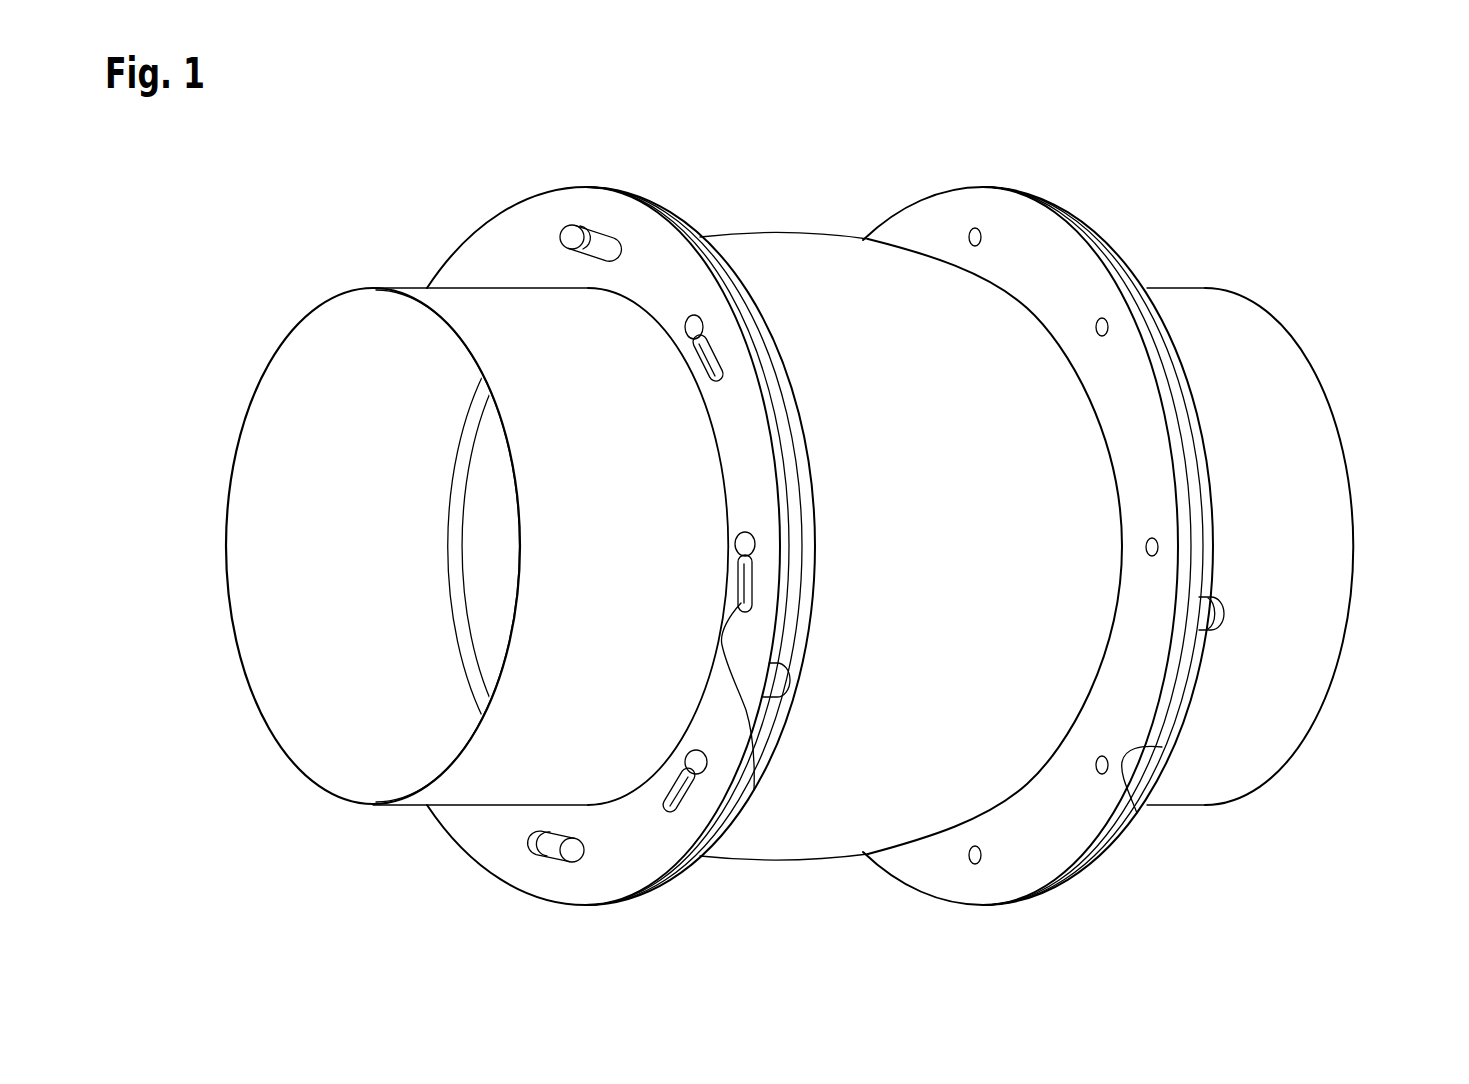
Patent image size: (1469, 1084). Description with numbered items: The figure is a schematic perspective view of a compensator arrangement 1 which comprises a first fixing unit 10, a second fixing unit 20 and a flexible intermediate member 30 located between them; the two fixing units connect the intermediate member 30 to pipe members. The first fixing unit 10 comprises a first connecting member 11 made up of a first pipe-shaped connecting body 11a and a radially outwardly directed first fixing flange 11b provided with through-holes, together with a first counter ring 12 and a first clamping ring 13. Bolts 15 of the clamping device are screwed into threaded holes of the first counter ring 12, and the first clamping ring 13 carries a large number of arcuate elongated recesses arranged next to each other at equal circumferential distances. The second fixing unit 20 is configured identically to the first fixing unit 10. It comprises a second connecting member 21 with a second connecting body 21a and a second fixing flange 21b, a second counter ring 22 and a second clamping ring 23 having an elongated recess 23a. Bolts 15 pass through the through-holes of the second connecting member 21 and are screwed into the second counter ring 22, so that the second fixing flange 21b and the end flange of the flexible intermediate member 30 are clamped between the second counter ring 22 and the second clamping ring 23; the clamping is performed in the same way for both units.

The compensator arrangement 1 is at (1297, 200).
The first fixing unit 10 is at (1090, 195).
The first connecting member 11 is at (1283, 322).
The first connecting body 11a is at (1330, 545).
The first fixing flange 11b is at (1137, 813).
The first counter ring 12 is at (948, 225).
The first clamping ring 13 is at (1180, 722).
The bolts 15 is at (572, 226).
The second fixing unit 20 is at (480, 190).
The second connecting member 21 is at (330, 290).
The second connecting body 21a is at (510, 752).
The second fixing flange 21b is at (740, 257).
The second counter ring 22 is at (778, 723).
The second clamping ring 23 is at (657, 255).
The elongated recess 23a is at (754, 790).
The flexible intermediate member 30 is at (820, 272).